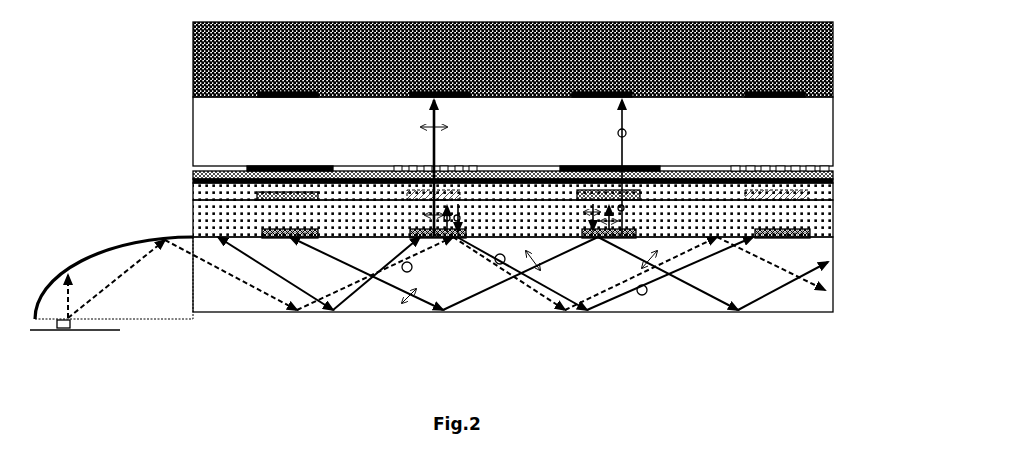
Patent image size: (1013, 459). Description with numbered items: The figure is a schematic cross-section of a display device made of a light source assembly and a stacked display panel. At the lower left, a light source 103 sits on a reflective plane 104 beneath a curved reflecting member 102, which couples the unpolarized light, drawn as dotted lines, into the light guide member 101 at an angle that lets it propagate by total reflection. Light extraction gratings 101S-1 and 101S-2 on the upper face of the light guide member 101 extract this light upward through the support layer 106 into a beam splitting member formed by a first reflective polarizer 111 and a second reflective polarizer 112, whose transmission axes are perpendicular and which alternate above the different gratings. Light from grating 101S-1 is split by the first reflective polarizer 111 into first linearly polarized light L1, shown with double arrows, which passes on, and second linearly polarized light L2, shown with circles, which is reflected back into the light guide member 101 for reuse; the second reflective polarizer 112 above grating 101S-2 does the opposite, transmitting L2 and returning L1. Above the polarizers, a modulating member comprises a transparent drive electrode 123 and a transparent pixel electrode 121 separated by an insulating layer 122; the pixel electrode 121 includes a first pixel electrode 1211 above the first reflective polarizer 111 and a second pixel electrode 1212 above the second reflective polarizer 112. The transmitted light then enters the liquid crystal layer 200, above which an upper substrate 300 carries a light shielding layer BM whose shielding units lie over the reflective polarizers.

The upper substrate 300 is at (833, 37).
The light shielding layer BM is at (805, 95).
The liquid crystal layer 200 is at (833, 115).
The first pixel electrode 1211 is at (340, 159).
The second pixel electrode 1212 is at (610, 159).
The pixel electrode 121 is at (833, 170).
The insulating layer 122 is at (833, 180).
The drive electrode 123 is at (833, 190).
The first reflective polarizer 111 is at (331, 194).
The second reflective polarizer 112 is at (588, 194).
The support layer 106 is at (833, 217).
The light extraction grating 101S-1 is at (364, 221).
The light extraction grating 101S-2 is at (666, 221).
The first linearly polarized light L1 is at (447, 168).
The second linearly polarized light L2 is at (635, 168).
The light guide member 101 is at (833, 259).
The curved reflecting member 102 is at (93, 257).
The light source 103 is at (63, 328).
The reflective plane 104 is at (115, 331).